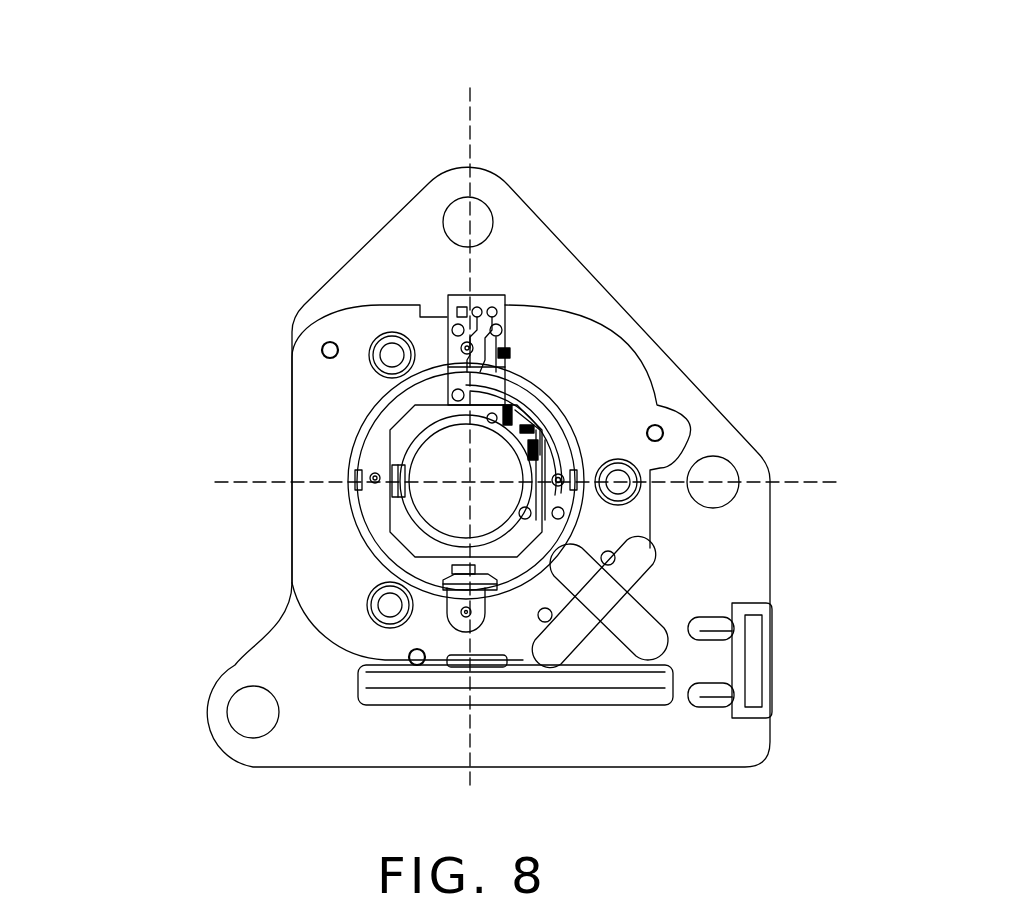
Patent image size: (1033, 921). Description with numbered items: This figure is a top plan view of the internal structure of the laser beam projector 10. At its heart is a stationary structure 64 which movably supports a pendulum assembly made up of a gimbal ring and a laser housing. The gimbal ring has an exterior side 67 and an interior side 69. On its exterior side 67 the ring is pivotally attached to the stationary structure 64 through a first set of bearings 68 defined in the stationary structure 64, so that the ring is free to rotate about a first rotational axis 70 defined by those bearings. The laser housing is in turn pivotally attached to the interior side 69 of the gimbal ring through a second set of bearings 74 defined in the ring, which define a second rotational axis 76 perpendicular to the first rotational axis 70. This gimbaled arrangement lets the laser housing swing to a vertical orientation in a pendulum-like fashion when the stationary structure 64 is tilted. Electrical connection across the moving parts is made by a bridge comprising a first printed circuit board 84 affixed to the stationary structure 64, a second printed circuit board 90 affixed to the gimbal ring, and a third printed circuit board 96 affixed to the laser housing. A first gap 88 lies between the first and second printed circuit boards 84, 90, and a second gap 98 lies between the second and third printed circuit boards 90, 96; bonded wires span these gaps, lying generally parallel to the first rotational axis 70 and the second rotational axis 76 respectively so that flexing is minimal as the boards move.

The laser beam projector 10 is at (380, 160).
The stationary structure 64 is at (600, 360).
The exterior side 67 is at (358, 502).
The first set of bearings 68 is at (410, 358).
The interior side 69 is at (452, 558).
The first rotational axis 70 is at (472, 112).
The second set of bearings 74 is at (392, 478).
The second rotational axis 76 is at (215, 481).
The first printed circuit board 84 is at (500, 298).
The first gap 88 is at (507, 355).
The second printed circuit board 90 is at (566, 500).
The third printed circuit board 96 is at (528, 498).
The second gap 98 is at (550, 445).